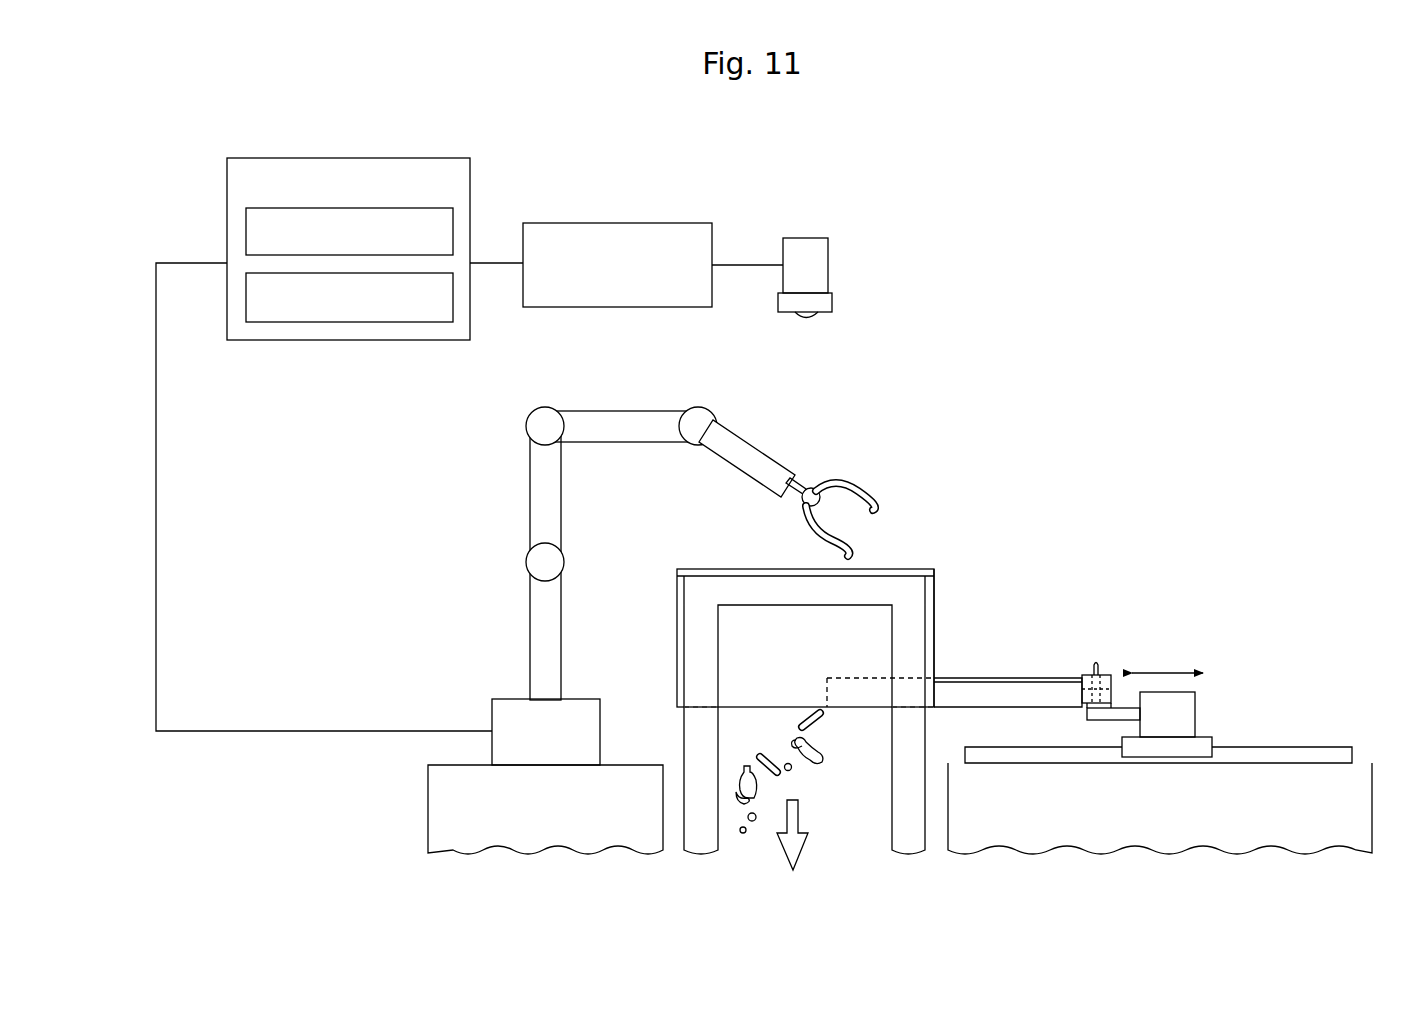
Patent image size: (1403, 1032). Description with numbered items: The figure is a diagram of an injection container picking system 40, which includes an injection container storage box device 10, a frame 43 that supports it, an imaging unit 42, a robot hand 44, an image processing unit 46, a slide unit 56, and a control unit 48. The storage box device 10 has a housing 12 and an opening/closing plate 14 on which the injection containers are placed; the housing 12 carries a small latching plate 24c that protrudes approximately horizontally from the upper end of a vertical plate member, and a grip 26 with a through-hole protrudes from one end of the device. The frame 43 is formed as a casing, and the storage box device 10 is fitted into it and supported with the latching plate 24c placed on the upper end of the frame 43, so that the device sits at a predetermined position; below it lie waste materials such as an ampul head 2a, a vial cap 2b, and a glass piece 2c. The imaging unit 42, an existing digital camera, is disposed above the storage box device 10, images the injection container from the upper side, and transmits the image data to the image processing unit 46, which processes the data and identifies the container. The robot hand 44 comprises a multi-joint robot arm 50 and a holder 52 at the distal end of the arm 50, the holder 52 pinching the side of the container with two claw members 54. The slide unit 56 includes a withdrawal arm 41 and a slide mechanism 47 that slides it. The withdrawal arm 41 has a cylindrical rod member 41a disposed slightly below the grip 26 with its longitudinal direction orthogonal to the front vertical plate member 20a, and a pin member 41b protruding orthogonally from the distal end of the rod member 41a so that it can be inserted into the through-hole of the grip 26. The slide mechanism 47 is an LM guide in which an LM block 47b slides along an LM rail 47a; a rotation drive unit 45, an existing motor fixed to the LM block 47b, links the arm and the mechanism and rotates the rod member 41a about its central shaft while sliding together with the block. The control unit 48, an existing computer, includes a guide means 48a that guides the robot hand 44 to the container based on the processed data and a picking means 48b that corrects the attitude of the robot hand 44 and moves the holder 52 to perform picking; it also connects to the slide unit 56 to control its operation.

The injection container storage box device 10 is at (837, 702).
The housing 12 is at (811, 678).
The opening/closing plate 14 is at (998, 700).
The front vertical plate member 20a is at (940, 585).
The latching plate 24c is at (700, 569).
The grip 26 is at (1090, 668).
The ampul head 2a is at (822, 725).
The vial cap 2b is at (820, 760).
The glass piece 2c is at (792, 770).
The injection container picking system 40 is at (999, 216).
The withdrawal arm 41 is at (1105, 610).
The rod member 41a is at (1120, 688).
The pin member 41b is at (1092, 675).
The imaging unit 42 is at (830, 268).
The frame 43 is at (690, 632).
The robot hand 44 is at (777, 440).
The rotation drive unit 45 is at (1198, 705).
The image processing unit 46 is at (653, 223).
The slide mechanism 47 is at (1171, 679).
The LM rail 47a is at (1315, 748).
The LM block 47b is at (1205, 740).
The control unit 48 is at (472, 183).
The guide means 48a is at (246, 225).
The picking means 48b is at (347, 322).
The multi-joint robot arm 50 is at (530, 506).
The holder 52 is at (876, 494).
The claw member 54 is at (842, 537).
The slide unit 56 is at (1171, 649).